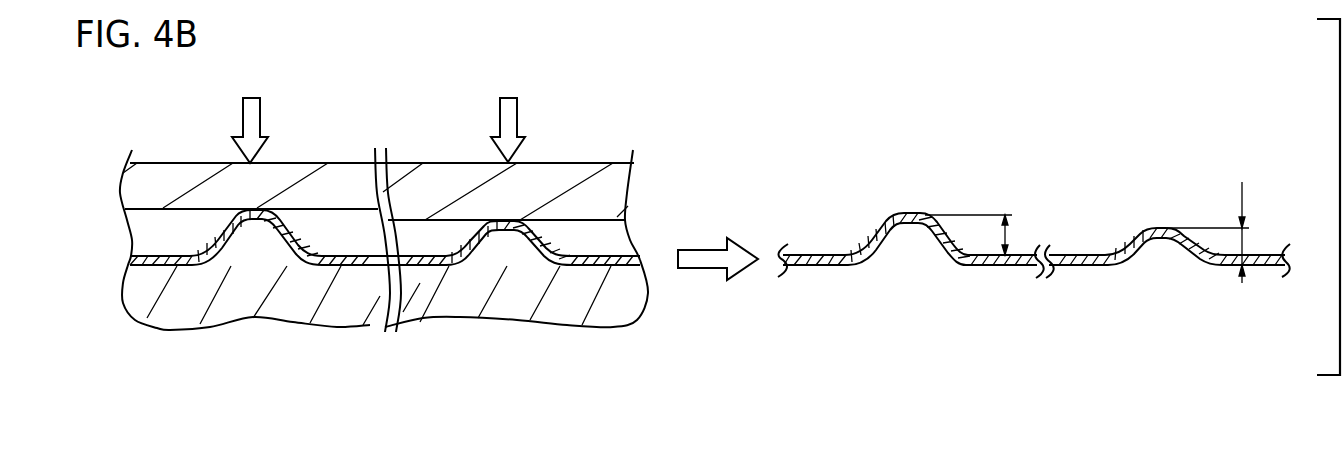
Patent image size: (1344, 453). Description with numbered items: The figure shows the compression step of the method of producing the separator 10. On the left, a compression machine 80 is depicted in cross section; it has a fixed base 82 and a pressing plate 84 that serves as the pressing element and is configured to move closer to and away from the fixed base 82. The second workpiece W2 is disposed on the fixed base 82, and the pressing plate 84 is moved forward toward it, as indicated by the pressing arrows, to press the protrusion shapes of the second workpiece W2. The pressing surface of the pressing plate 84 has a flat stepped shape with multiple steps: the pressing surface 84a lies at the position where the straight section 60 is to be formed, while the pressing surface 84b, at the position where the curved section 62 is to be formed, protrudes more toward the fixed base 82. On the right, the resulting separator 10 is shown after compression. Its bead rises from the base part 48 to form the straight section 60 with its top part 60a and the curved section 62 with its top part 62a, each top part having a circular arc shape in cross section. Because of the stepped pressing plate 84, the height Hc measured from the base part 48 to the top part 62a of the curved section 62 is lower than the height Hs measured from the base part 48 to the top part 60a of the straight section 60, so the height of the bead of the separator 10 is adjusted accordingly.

The compression machine 80 is at (363, 97).
The fixed base 82 is at (282, 300).
The pressing plate 84 is at (157, 175).
The pressing surface 84a is at (320, 210).
The pressing surface 84b is at (398, 223).
The second workpiece W2 is at (147, 252).
The separator 10 is at (830, 245).
The base part 48 is at (807, 264).
The straight section 60 is at (913, 209).
The top part 60a is at (908, 212).
The curved section 62 is at (1157, 218).
The top part 62a is at (1162, 226).
The height of the straight section Hs is at (981, 235).
The height of the curved section Hc is at (1222, 232).